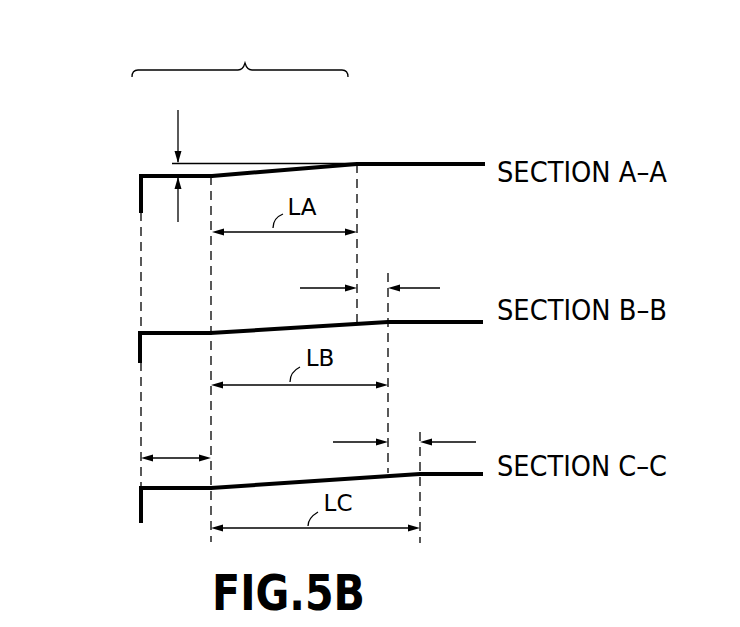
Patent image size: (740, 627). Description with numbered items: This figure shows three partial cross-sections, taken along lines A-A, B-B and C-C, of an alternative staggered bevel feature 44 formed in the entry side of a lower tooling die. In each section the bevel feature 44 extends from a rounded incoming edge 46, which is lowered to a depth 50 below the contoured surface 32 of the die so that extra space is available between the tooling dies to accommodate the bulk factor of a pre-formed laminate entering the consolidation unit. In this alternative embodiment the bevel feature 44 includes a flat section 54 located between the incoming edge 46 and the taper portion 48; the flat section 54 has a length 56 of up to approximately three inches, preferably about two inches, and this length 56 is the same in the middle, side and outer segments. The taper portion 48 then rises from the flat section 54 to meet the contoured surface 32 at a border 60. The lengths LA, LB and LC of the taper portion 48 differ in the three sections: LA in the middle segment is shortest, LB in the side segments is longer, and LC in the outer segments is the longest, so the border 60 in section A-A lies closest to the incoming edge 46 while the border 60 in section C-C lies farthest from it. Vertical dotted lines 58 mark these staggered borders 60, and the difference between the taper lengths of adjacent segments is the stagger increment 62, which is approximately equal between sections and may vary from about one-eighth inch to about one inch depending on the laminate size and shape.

The contoured surface 32 is at (457, 162).
The bevel feature 44 is at (240, 55).
The incoming edge 46 is at (139, 180).
The taper portion 48 is at (272, 163).
The depth 50 is at (172, 164).
The flat section 54 is at (173, 333).
The length 56 is at (172, 456).
The vertical dotted lines 58 is at (358, 213).
The border 60 is at (358, 161).
The stagger increment 62 is at (372, 285).